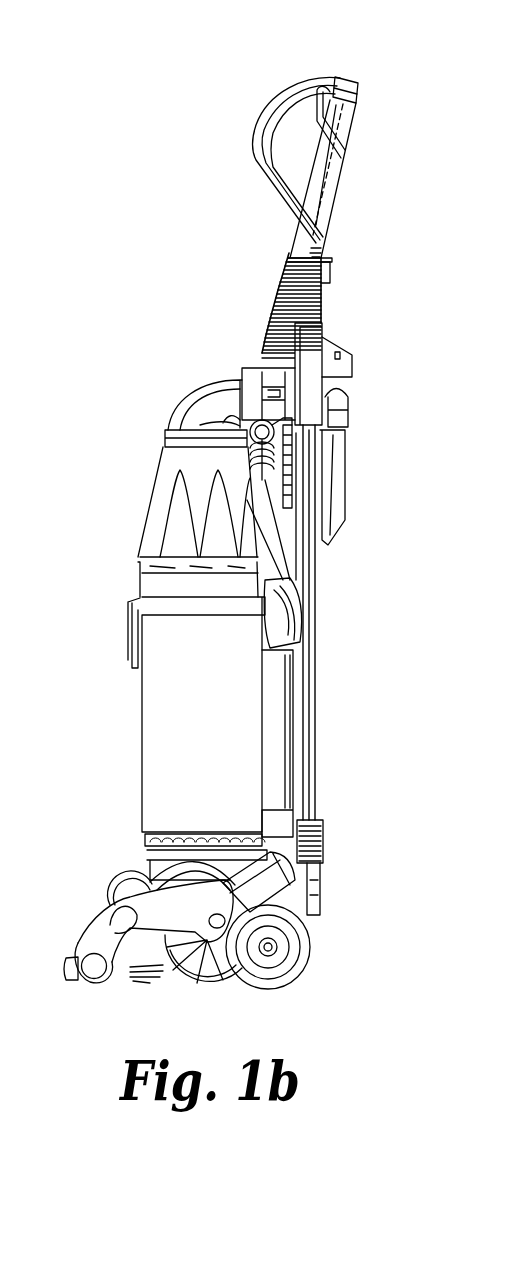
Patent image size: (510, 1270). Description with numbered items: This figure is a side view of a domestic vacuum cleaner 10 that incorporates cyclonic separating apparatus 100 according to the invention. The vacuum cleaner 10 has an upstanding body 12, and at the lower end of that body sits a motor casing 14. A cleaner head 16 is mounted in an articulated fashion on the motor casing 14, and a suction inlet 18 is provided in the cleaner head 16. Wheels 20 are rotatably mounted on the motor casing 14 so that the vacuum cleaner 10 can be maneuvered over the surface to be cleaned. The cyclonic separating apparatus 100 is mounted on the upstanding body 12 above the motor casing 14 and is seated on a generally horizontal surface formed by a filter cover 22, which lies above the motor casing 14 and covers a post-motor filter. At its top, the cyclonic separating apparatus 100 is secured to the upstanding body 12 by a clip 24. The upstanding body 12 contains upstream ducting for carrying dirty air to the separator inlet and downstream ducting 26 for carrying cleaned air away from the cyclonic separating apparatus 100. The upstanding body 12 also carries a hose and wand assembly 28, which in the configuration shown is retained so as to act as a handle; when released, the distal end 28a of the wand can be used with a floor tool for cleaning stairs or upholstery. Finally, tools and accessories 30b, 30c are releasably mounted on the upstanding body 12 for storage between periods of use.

The vacuum cleaner 10 is at (225, 280).
The cyclonic separating apparatus 100 is at (131, 683).
The upstanding body 12 is at (297, 567).
The motor casing 14 is at (215, 970).
The cleaner head 16 is at (110, 945).
The suction inlet 18 is at (95, 986).
The wheels 20 is at (311, 946).
The filter cover 22 is at (150, 836).
The clip 24 is at (240, 372).
The downstream ducting 26 is at (292, 636).
The hose and wand assembly 28 is at (328, 242).
The distal end of the wand 28a is at (348, 80).
The tool/accessory 30b is at (278, 430).
The tool/accessory 30c is at (337, 490).